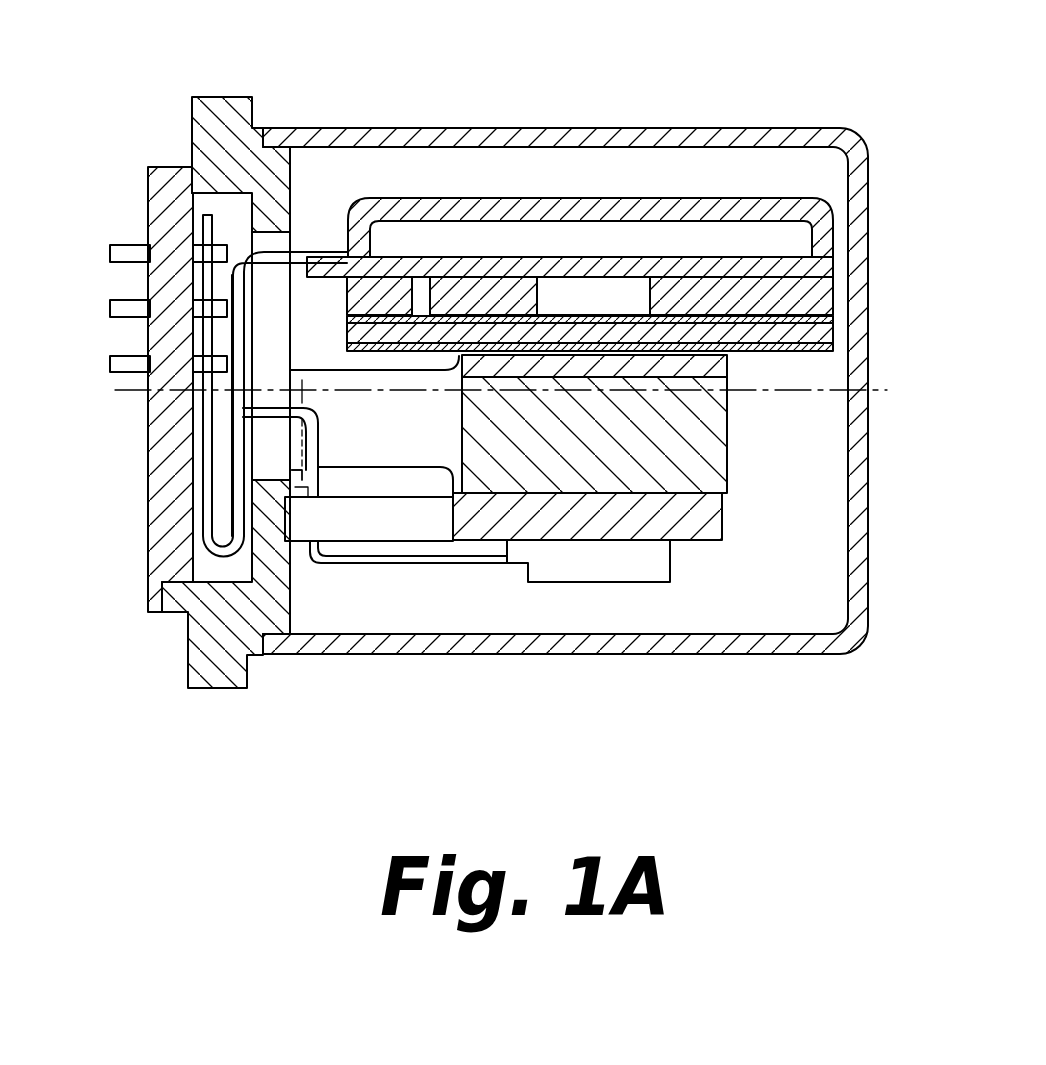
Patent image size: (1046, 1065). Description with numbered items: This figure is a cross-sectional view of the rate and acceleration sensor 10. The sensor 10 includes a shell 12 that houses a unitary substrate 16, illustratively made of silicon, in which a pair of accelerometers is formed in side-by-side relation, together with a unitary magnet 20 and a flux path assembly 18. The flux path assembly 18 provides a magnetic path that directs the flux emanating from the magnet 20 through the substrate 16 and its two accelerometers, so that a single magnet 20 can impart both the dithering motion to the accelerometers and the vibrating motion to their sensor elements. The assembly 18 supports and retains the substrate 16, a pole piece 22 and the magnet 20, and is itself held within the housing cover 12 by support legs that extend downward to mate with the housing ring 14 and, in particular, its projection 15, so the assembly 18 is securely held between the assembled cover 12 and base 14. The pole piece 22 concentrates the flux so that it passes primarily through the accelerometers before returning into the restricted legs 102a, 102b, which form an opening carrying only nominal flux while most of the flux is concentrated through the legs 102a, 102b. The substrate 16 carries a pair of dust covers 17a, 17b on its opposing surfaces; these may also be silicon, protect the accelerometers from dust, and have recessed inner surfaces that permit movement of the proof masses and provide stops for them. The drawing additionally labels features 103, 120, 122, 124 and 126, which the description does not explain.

The rate and acceleration sensor 10 is at (694, 108).
The shell 12 is at (430, 127).
The housing ring 14 is at (230, 689).
The projection 15 is at (322, 494).
The unitary substrate 16 is at (544, 263).
The dust cover 17a is at (378, 322).
The dust cover 17b is at (408, 353).
The flux path assembly 18 is at (726, 529).
The unitary magnet 20 is at (637, 435).
The pole piece 22 is at (725, 372).
The restricted leg 102a is at (458, 292).
The restricted leg 102b is at (727, 283).
The gap between magnets 103 is at (590, 287).
The header insulator plate 120 is at (149, 480).
The terminal pins 122 is at (125, 357).
The magnet cover 124 is at (486, 200).
The coil terminal 126 is at (598, 568).